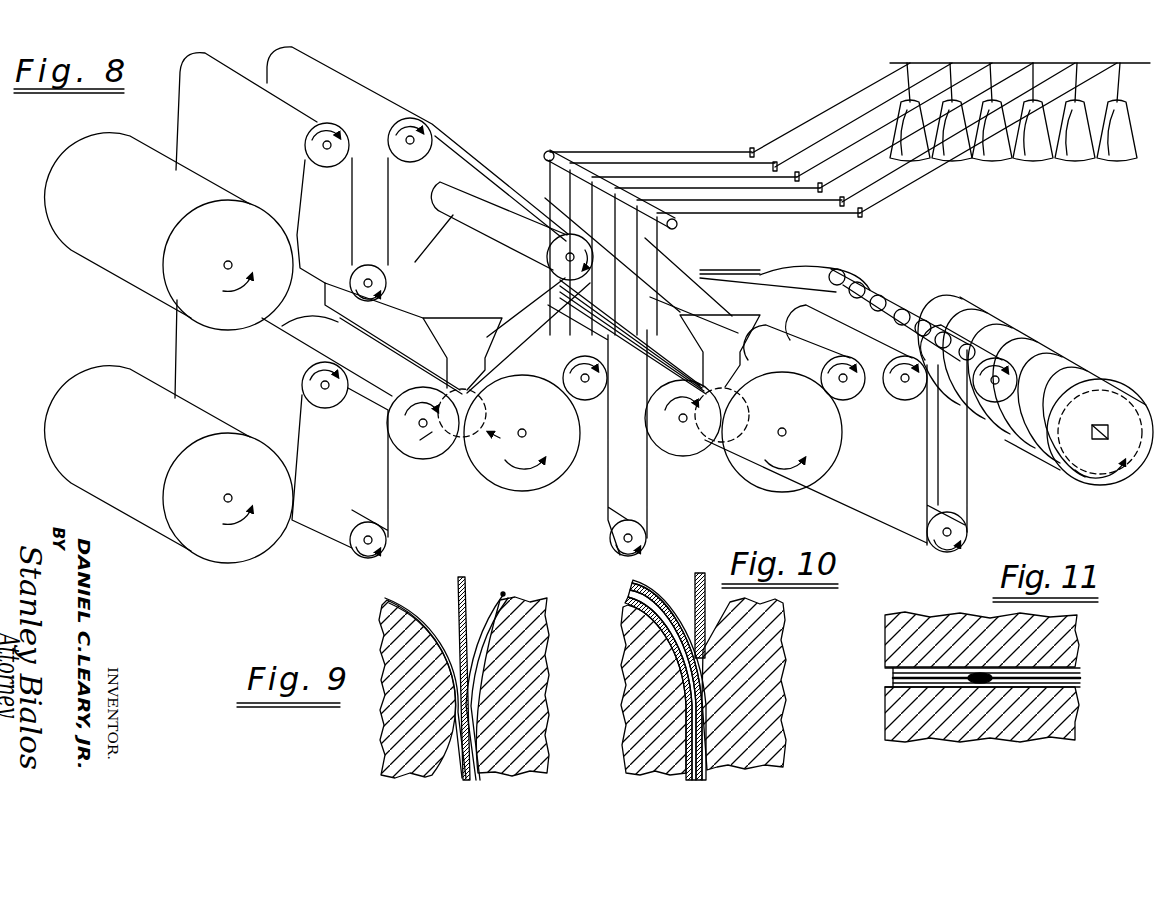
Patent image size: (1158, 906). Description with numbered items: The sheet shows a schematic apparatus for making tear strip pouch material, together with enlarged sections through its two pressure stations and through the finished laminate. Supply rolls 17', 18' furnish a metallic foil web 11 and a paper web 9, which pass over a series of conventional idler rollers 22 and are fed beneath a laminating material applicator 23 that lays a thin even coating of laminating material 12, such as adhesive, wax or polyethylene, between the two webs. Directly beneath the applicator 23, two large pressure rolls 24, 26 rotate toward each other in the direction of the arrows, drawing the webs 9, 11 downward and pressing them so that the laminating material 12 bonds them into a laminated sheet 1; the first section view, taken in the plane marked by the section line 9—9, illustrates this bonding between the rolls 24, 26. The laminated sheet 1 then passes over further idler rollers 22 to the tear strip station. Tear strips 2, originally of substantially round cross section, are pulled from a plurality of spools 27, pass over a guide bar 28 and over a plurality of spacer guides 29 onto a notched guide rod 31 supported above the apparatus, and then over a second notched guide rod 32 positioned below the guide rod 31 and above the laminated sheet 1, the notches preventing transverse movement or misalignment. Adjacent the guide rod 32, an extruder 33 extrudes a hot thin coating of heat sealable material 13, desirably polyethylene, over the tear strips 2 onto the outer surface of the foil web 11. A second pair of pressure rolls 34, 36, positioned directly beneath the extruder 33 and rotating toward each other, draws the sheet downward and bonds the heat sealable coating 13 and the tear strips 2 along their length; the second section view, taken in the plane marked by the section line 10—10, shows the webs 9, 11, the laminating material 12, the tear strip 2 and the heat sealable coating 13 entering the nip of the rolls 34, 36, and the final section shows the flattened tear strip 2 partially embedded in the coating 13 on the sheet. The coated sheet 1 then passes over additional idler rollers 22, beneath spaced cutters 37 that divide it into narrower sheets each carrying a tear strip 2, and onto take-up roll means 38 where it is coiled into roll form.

In FIG. 8, the laminated sheet 1 is at (642, 492).
In FIG. 8, the tear strips 2 is at (838, 118).
In FIG. 10, the tear strips 2 is at (668, 592).
In FIG. 11, the tear strips 2 is at (980, 672).
In FIG. 8, the paper web 9 is at (231, 396).
In FIG. 9, the paper web 9 is at (404, 622).
In FIG. 10, the paper web 9 is at (625, 608).
In FIG. 11, the paper web 9 is at (1083, 668).
In FIG. 8, the belt 10 is at (806, 391).
In FIG. 8, the metallic foil web 11 is at (230, 162).
In FIG. 9, the metallic foil web 11 is at (503, 593).
In FIG. 10, the metallic foil web 11 is at (628, 600).
In FIG. 11, the metallic foil web 11 is at (1083, 682).
In FIG. 8, the laminating material 12 is at (480, 406).
In FIG. 9, the laminating material 12 is at (462, 577).
In FIG. 10, the laminating material 12 is at (627, 605).
In FIG. 11, the laminating material 12 is at (1083, 673).
In FIG. 8, the heat sealable coating 13 is at (742, 406).
In FIG. 10, the heat sealable coating 13 is at (698, 573).
In FIG. 11, the heat sealable coating 13 is at (1083, 687).
In FIG. 8, the supply roll 17' is at (169, 231).
In FIG. 8, the supply roll 18' is at (169, 464).
In FIG. 8, the idler rollers 22 is at (342, 134).
In FIG. 8, the laminating material applicator 23 is at (450, 346).
In FIG. 8, the pressure roll 24 is at (395, 446).
In FIG. 9, the pressure roll 24 is at (386, 712).
In FIG. 8, the pressure roll 26 is at (530, 418).
In FIG. 9, the pressure roll 26 is at (537, 682).
In FIG. 8, the spools 27 is at (990, 162).
In FIG. 8, the guide bar 28 is at (1068, 63).
In FIG. 8, the spacer guides 29 is at (858, 218).
In FIG. 8, the guide rod 31 is at (680, 228).
In FIG. 8, the second guide rod 32 is at (700, 272).
In FIG. 8, the extruder 33 is at (711, 344).
In FIG. 8, the pressure roll 34 is at (656, 444).
In FIG. 10, the pressure roll 34 is at (630, 660).
In FIG. 8, the pressure roll 36 is at (797, 418).
In FIG. 10, the pressure roll 36 is at (764, 684).
In FIG. 8, the cutters 37 is at (860, 285).
In FIG. 8, the take-up roll means 38 is at (1122, 470).